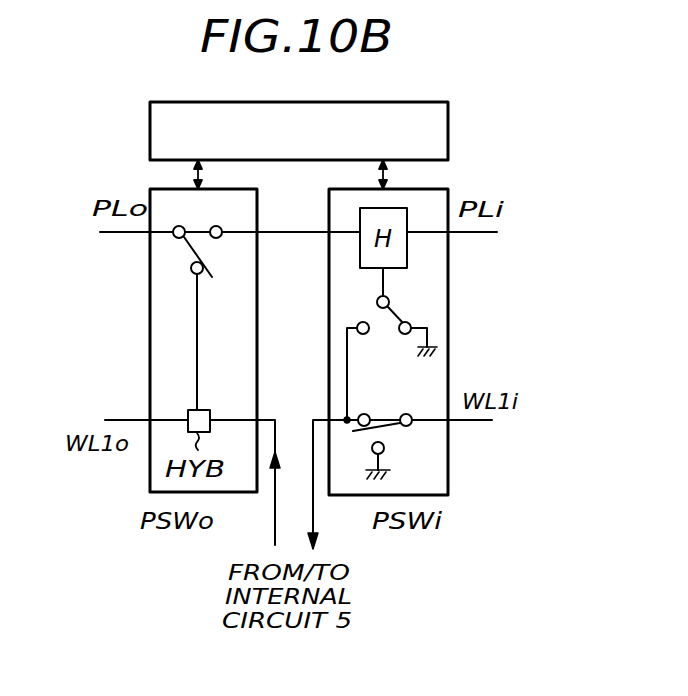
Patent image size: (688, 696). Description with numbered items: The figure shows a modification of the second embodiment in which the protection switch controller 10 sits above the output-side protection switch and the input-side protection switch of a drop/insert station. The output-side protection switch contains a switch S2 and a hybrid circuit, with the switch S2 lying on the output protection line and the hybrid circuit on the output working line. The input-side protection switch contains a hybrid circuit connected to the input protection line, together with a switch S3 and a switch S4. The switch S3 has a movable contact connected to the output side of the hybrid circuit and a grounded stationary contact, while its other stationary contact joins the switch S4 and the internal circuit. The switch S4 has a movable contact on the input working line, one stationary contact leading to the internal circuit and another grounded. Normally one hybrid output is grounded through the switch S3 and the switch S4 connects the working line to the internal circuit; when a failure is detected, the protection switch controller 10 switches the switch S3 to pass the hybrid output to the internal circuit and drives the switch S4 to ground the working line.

The protection switch controller 10 is at (449, 125).
The switch S2 is at (175, 261).
The switch S3 is at (412, 308).
The switch S4 is at (402, 432).